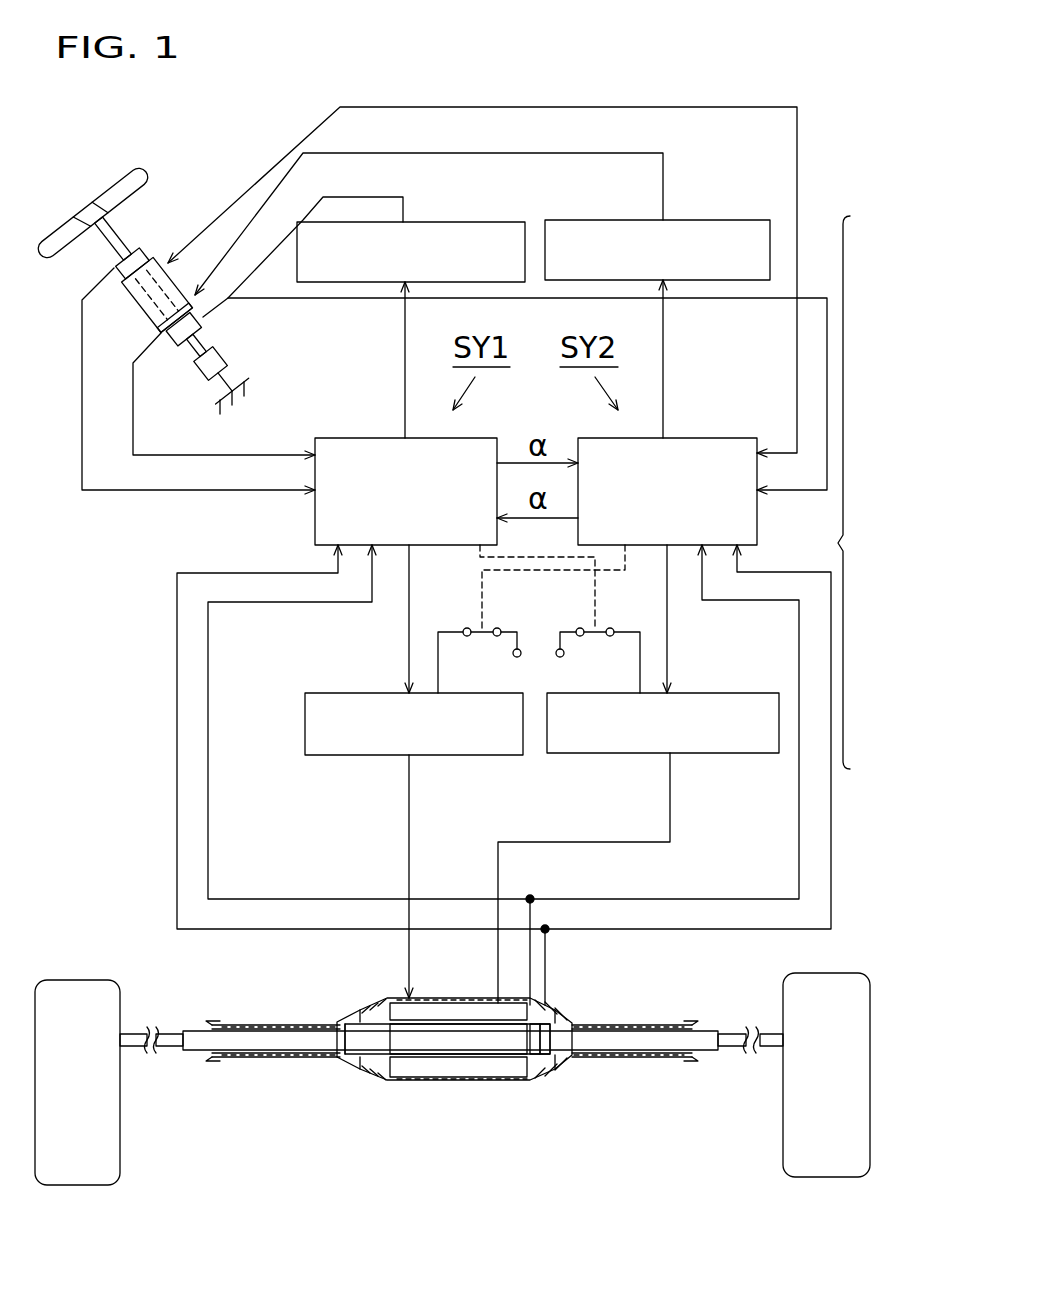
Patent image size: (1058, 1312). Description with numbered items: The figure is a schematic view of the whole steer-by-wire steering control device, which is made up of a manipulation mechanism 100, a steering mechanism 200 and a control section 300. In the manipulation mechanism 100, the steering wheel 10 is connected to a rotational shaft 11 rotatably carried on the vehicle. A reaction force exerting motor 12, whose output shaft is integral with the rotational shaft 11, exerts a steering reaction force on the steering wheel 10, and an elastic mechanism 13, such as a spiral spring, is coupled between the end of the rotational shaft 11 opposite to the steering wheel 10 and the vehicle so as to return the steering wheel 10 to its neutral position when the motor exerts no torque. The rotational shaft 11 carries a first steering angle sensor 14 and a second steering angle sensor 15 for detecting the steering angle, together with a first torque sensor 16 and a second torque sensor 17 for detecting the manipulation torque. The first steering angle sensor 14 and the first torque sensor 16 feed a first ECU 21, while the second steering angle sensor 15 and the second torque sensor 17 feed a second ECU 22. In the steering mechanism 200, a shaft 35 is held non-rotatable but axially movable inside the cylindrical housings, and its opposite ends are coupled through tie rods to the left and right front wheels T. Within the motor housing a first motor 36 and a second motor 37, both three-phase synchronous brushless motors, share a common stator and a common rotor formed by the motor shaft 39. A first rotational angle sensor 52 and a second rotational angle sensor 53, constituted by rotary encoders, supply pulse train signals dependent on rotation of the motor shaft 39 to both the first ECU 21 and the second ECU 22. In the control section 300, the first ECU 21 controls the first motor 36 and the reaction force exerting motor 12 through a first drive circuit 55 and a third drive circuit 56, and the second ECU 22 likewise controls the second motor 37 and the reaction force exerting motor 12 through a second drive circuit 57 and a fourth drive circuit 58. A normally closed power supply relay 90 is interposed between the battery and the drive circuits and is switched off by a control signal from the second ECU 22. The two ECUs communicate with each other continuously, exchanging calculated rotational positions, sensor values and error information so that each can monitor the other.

The steering wheel 10 is at (125, 179).
The rotational shaft 11 is at (130, 237).
The reaction force exerting motor 12 is at (162, 339).
The elastic mechanism 13 is at (234, 351).
The first steering angle sensor 14 is at (110, 262).
The second steering angle sensor 15 is at (121, 292).
The first torque sensor 16 is at (217, 298).
The second torque sensor 17 is at (175, 345).
The first ECU 21 is at (349, 438).
The second ECU 22 is at (739, 438).
The shaft 35 is at (305, 1048).
The first motor 36 is at (420, 1087).
The second motor 37 is at (463, 1179).
The motor shaft 39 is at (490, 1047).
The first rotational angle sensor 52 is at (540, 1063).
The second rotational angle sensor 53 is at (547, 1057).
The first drive circuit 55 is at (305, 729).
The third drive circuit 56 is at (478, 222).
The second drive circuit 57 is at (738, 693).
The fourth drive circuit 58 is at (738, 220).
The power supply relay 90 is at (466, 627).
The manipulation mechanism 100 is at (188, 195).
The steering mechanism 200 is at (605, 1110).
The control section 300 is at (924, 556).
The front wheels T is at (120, 1141).